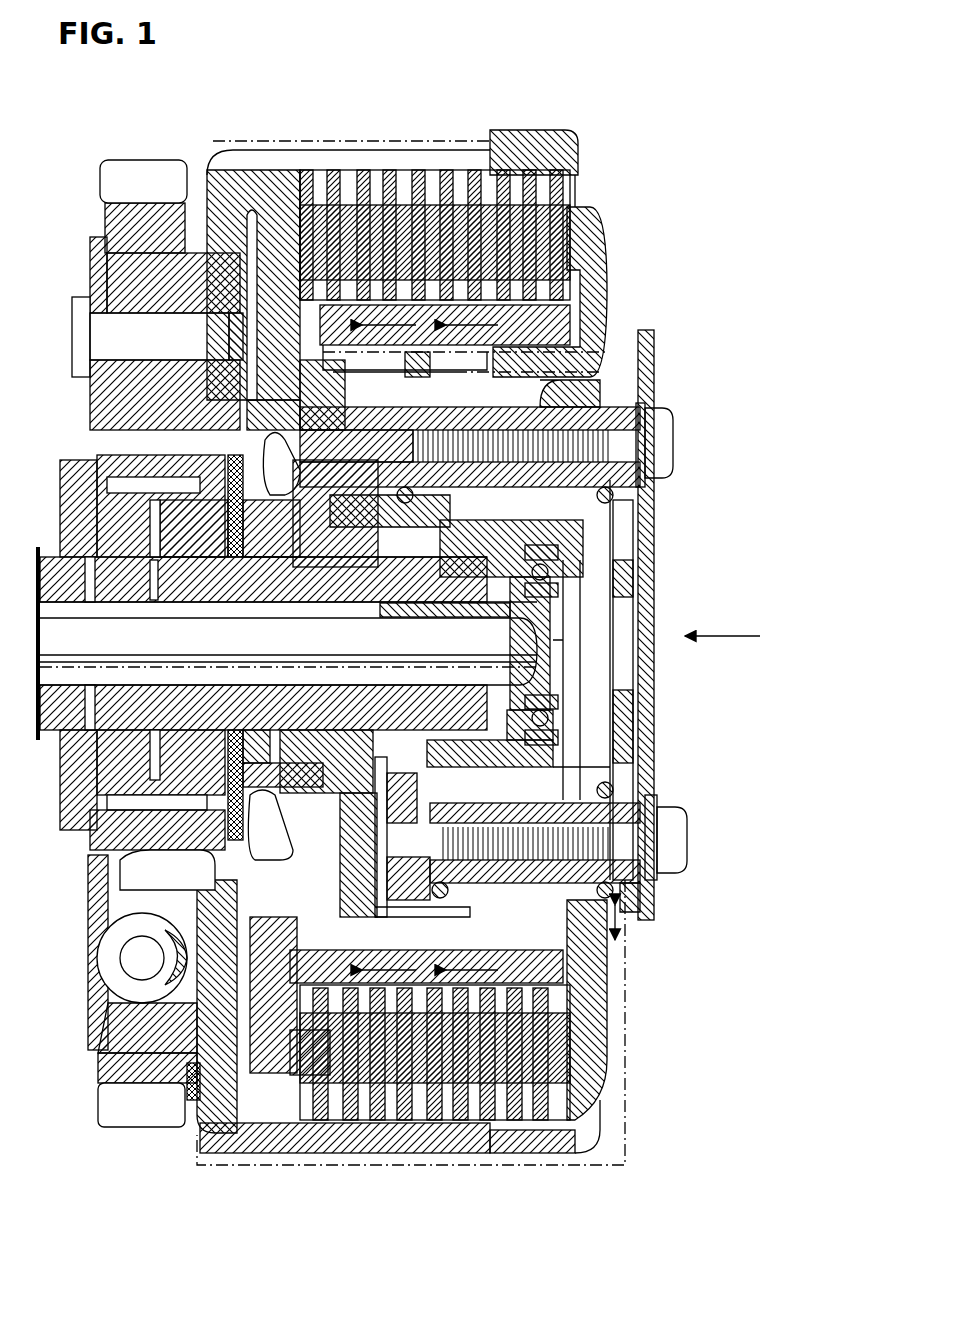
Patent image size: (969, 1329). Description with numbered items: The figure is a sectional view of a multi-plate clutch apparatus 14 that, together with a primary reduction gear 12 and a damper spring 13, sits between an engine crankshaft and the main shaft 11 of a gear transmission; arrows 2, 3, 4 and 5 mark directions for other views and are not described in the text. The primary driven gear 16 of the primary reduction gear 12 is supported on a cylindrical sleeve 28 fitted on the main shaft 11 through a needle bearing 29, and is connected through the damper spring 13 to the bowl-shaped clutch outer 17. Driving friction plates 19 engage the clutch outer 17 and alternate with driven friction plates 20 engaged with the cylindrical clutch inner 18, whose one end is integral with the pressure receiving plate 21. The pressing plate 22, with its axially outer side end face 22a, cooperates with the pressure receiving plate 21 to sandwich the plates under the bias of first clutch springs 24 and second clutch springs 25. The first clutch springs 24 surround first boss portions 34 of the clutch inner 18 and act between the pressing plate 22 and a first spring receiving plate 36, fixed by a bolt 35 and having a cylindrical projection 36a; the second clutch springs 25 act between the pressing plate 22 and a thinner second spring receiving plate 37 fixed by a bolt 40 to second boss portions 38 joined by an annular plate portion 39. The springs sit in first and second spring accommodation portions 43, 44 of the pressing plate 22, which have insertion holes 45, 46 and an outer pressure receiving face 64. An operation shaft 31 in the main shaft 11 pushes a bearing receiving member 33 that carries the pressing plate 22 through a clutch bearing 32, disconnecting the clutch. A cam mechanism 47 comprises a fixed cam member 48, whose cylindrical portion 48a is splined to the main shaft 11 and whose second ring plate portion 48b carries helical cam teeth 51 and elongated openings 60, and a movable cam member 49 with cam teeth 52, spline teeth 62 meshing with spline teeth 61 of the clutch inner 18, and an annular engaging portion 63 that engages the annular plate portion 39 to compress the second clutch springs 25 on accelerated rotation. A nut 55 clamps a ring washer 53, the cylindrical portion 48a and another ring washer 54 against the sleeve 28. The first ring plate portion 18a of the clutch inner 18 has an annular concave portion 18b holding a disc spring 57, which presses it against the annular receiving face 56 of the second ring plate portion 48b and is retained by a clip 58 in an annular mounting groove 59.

The clutch device 2 is at (195, 1156).
The direction 3 is at (481, 647).
The direction 4 is at (392, 647).
The direction 5 is at (723, 639).
The main shaft 11 is at (60, 740).
The primary reduction gear 12 is at (100, 175).
The damper spring 13 is at (100, 956).
The clutch apparatus 14 is at (578, 195).
The primary driven gear 16 is at (150, 160).
The clutch outer 17 is at (227, 200).
The clutch inner 18 is at (570, 300).
The first ring plate portion 18a is at (232, 340).
The annular concave portion 18b is at (194, 528).
The driving friction plates 19 is at (385, 170).
The driven friction plates 20 is at (448, 170).
The pressure receiving plate 21 is at (262, 215).
The pressing plate 22 is at (590, 235).
The axially outer side end face 22a is at (600, 990).
The first clutch springs 24 is at (612, 497).
The second clutch springs 25 is at (614, 790).
The cylindrical sleeve 28 is at (100, 523).
The needle bearing 29 is at (125, 478).
The operation shaft 31 is at (48, 658).
The clutch bearing 32 is at (550, 720).
The bearing receiving member 33 is at (654, 622).
The first boss portion 34 is at (625, 520).
The bolt 35 is at (662, 452).
The first spring receiving plate 36 is at (633, 578).
The cylindrical projection 36a is at (612, 382).
The second spring receiving plate 37 is at (645, 890).
The second boss portions 38 is at (657, 812).
The annular plate portion 39 is at (400, 780).
The bolt 40 is at (670, 848).
The first spring accommodation portion 43 is at (492, 530).
The second spring accommodation portion 44 is at (565, 748).
The insertion hole 45 is at (430, 495).
The insertion hole 46 is at (378, 828).
The cam mechanism 47 is at (279, 995).
The fixed cam member 48 is at (300, 508).
The cylindrical portion 48a is at (300, 590).
The second ring plate portion 48b is at (330, 878).
The movable cam member 49 is at (295, 956).
The cam teeth 51 is at (365, 890).
The cam teeth 52 is at (305, 375).
The ring washer 53 is at (228, 577).
The ring washer 54 is at (415, 617).
The nut 55 is at (545, 700).
The annular receiving face 56 is at (170, 785).
The disc spring 57 is at (120, 862).
The clip 58 is at (108, 885).
The annular mounting groove 59 is at (190, 360).
The opening 60 is at (281, 464).
The spline teeth 61 is at (622, 935).
The spline teeth 62 is at (430, 1035).
The annular engaging portion 63 is at (392, 425).
The pressure receiving face 64 is at (555, 365).